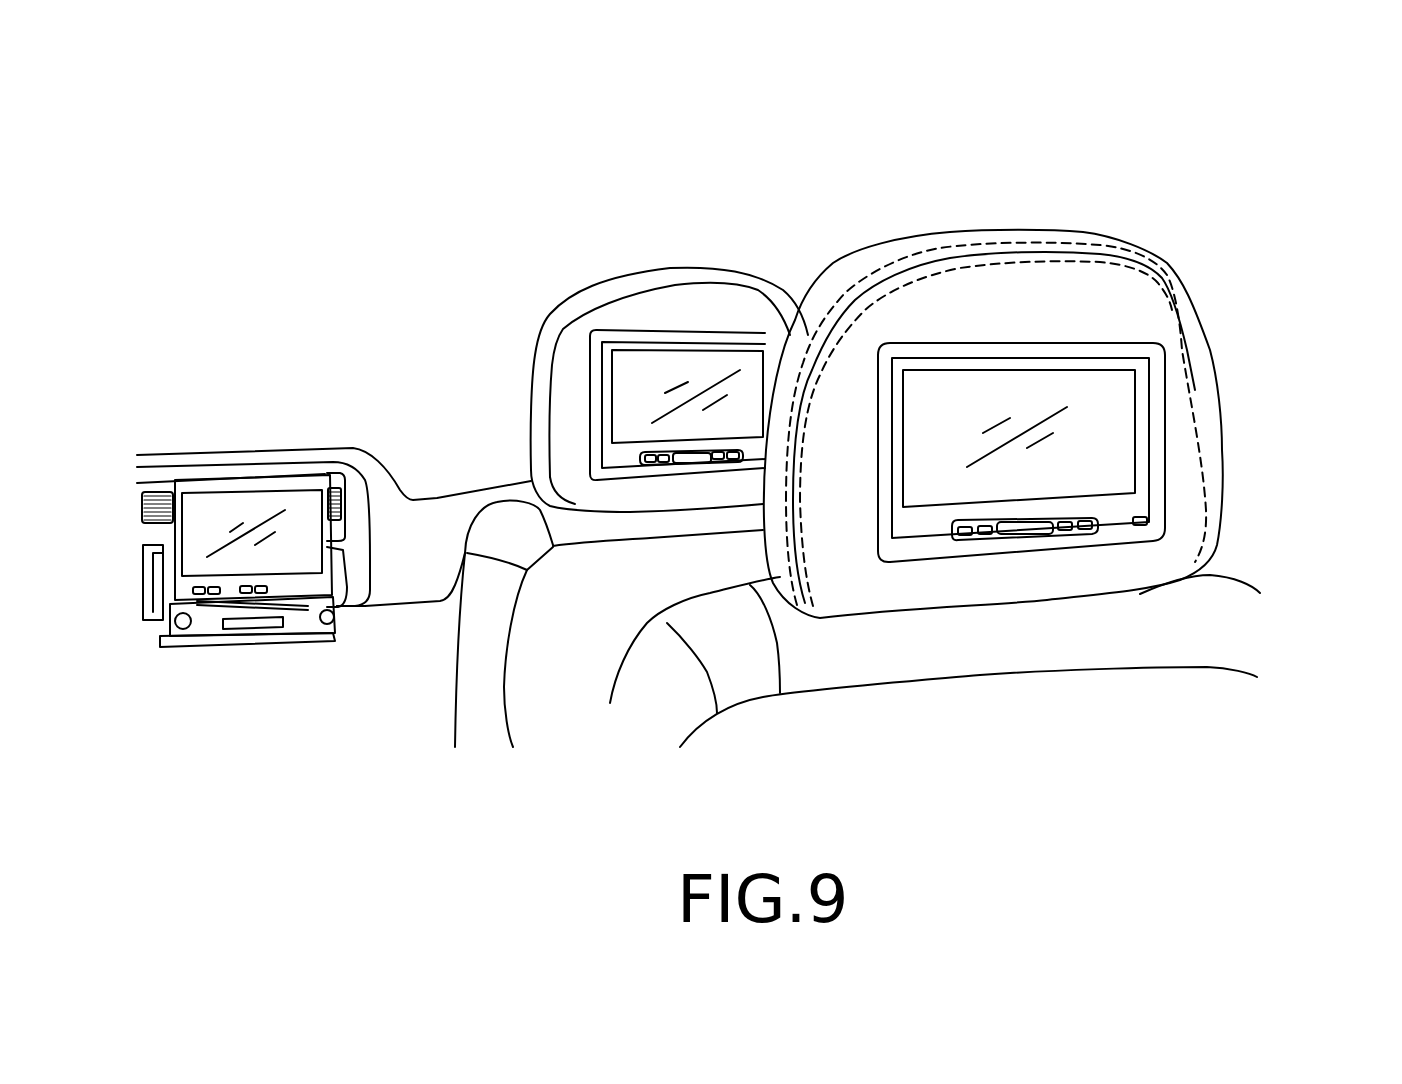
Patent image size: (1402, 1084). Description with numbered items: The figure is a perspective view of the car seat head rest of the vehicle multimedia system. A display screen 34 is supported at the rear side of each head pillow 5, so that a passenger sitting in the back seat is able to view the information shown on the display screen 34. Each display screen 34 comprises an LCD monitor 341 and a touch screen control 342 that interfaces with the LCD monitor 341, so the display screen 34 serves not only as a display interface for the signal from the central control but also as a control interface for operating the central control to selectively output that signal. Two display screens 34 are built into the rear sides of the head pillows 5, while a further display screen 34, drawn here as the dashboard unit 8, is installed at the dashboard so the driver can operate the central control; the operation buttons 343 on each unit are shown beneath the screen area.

The head pillow 5 is at (841, 299).
The display unit in dashboard 8 is at (228, 597).
The display screen 34 is at (1143, 233).
The LCD monitor 341 is at (1148, 424).
The touch screen control 342 is at (1027, 383).
The operation buttons 343 is at (981, 540).